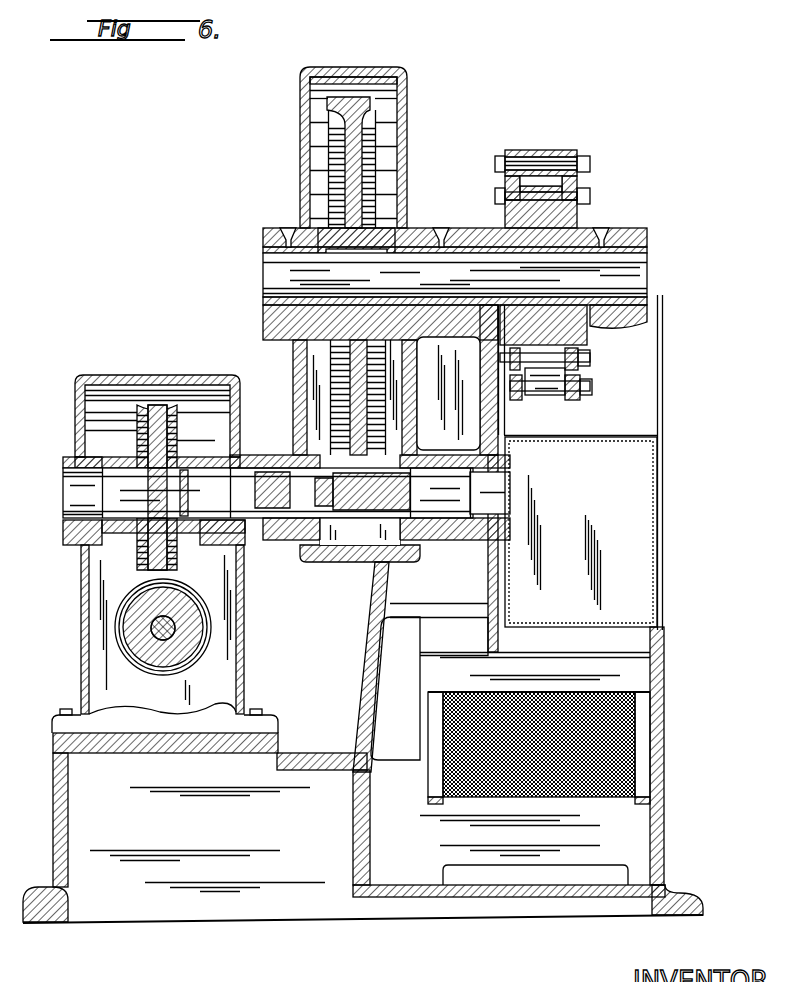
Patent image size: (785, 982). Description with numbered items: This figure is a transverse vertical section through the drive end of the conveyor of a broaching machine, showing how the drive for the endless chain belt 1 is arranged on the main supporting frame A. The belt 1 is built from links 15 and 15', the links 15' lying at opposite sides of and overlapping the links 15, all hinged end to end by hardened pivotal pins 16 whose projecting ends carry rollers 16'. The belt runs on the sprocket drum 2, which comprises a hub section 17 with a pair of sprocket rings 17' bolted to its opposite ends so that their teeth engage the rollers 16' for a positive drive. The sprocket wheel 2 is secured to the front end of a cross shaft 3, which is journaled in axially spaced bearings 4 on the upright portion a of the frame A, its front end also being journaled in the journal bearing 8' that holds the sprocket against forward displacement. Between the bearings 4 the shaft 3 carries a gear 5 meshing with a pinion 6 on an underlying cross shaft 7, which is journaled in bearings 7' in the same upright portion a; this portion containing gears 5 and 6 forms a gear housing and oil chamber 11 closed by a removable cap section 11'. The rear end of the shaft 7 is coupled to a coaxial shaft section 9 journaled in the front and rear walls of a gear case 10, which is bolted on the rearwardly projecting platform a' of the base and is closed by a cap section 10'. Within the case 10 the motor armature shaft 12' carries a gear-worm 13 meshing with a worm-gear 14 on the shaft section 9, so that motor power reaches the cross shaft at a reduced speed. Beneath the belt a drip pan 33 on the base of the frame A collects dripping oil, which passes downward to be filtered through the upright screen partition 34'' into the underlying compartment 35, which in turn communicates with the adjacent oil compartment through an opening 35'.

The endless chain belt 1 is at (540, 151).
The sprocket drum 2 is at (565, 186).
The cross shaft 3 is at (437, 271).
The bearings 4 is at (288, 231).
The gear 5 is at (347, 95).
The pinion 6 is at (362, 524).
The cross shaft 7 is at (457, 383).
The bearings 7' is at (386, 542).
The journal bearing 8' is at (627, 221).
The shaft section 9 is at (122, 517).
The gear case 10 is at (163, 639).
The cap section 10' is at (157, 408).
The gear housing and oil chamber 11 is at (341, 464).
The cap section 11' is at (358, 131).
The armature shaft 12' is at (154, 658).
The gear-worm 13 is at (123, 631).
The worm-gear 14 is at (157, 410).
The links 15 is at (541, 144).
The links 15' is at (556, 159).
The pivotal pins 16 is at (599, 172).
The rollers 16' is at (490, 165).
The hub section 17 is at (559, 331).
The sprocket rings 17' is at (544, 284).
The drip pan 33 is at (663, 568).
The upright screen partition 34'' is at (539, 756).
The compartment 35 is at (529, 842).
The opening 35' is at (535, 904).
The main supporting frame A is at (364, 716).
The upright portion a is at (368, 667).
The platform a' is at (195, 827).